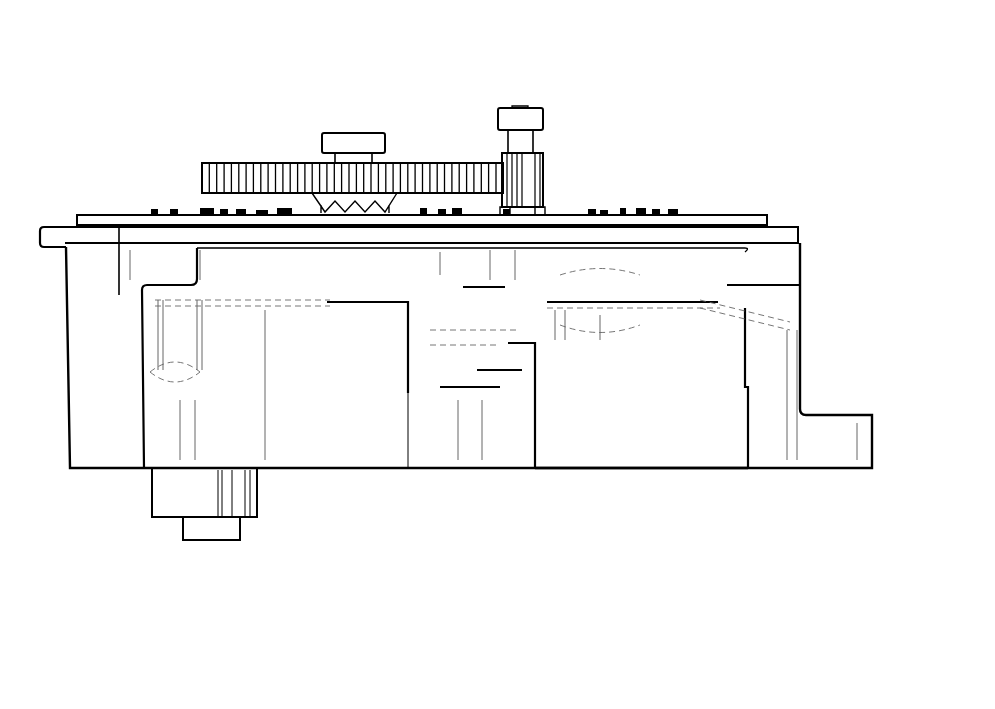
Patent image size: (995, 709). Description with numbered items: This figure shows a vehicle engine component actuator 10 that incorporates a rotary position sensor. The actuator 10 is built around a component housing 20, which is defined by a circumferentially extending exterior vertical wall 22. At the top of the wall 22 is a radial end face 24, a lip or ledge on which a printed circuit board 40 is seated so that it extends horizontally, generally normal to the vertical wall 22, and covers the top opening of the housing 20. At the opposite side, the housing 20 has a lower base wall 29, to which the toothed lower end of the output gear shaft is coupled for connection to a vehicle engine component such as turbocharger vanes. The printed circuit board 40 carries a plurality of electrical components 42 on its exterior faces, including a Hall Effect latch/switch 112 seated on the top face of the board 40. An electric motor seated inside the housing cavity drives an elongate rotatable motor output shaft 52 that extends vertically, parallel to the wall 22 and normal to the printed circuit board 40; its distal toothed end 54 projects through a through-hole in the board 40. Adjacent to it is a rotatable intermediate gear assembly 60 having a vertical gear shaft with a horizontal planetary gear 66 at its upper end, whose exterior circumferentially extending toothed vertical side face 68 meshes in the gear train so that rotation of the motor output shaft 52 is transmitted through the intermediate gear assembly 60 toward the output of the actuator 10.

The vehicle engine component actuator 10 is at (750, 146).
The component housing 20 is at (802, 345).
The exterior vertical wall 22 is at (677, 387).
The radial end face 24 is at (58, 227).
The lower base wall 29 is at (353, 470).
The printed circuit board 40 is at (757, 223).
The electrical components 42 is at (178, 212).
The motor output shaft 52 is at (530, 140).
The distal toothed end 54 is at (533, 182).
The intermediate gear assembly 60 is at (365, 132).
The planetary gear 66 is at (374, 123).
The toothed vertical side face 68 is at (432, 177).
The Hall Effect latch/switch 112 is at (280, 210).